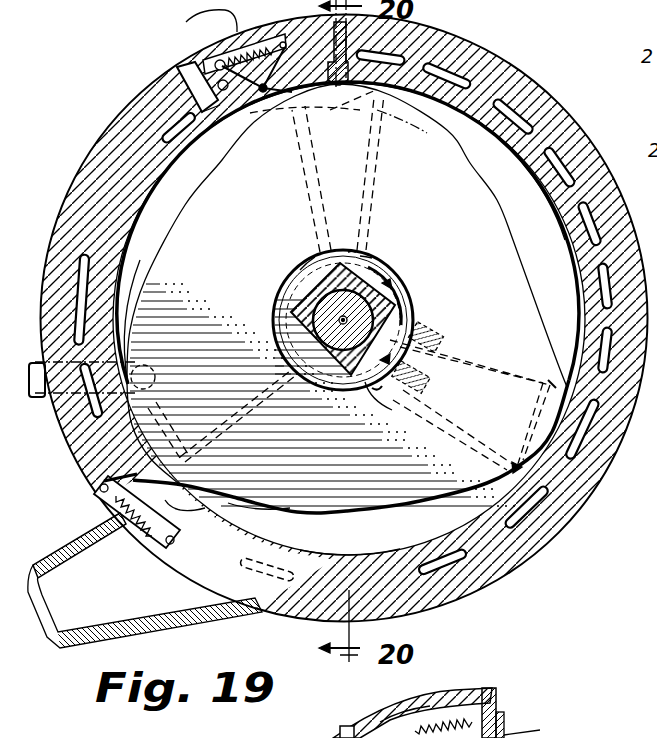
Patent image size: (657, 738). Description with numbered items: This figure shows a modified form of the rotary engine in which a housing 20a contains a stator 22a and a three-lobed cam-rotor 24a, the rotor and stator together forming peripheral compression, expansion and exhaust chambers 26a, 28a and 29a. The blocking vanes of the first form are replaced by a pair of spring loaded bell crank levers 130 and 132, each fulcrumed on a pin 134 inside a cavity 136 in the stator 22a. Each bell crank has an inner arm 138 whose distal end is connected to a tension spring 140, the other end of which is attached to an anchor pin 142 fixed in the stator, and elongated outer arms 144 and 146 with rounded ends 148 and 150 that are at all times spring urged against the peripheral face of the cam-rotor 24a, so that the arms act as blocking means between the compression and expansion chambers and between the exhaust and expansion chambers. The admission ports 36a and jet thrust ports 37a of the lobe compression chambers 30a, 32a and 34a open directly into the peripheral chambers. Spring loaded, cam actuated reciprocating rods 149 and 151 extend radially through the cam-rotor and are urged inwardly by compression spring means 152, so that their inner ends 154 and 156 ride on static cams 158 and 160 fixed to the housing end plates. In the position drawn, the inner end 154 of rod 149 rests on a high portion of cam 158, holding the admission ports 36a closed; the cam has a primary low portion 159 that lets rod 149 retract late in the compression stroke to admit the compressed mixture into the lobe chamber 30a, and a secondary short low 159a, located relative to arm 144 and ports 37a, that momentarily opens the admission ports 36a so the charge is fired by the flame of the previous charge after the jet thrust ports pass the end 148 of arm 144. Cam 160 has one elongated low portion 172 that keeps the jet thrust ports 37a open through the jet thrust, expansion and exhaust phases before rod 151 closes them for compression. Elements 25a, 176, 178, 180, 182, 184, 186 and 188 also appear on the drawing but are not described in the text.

The housing 20a is at (526, 73).
The stator 22a is at (466, 43).
The three lobed cam-rotor 24a is at (461, 256).
The hub 25a is at (400, 300).
The compression chamber 26a is at (183, 226).
The expansion chamber 28a is at (543, 216).
The exhaust chamber 29a is at (389, 541).
The compression chamber 30a is at (122, 440).
The compression chamber 32a is at (341, 171).
The compression chamber 34a is at (470, 403).
The admission ports 36a is at (513, 467).
The jet thrust ports 37a is at (550, 381).
The bell crank lever 130 is at (220, 118).
The bell crank lever 132 is at (106, 480).
The pin 134 is at (262, 94).
The cavity 136 is at (206, 58).
The inner arm 138 is at (179, 71).
The tension spring 140 is at (190, 20).
The anchor pin 142 is at (273, 100).
The outer arm 144 is at (343, 90).
The outer arm 146 is at (214, 511).
The rounded end 148 is at (375, 130).
The reciprocating rod 149 is at (478, 433).
The rounded end 150 is at (273, 516).
The reciprocating rod 151 is at (463, 355).
The compression spring means 152 is at (431, 379).
The inner end 154 is at (362, 256).
The inner end 156 is at (318, 266).
The static cam 158 is at (364, 386).
The primary low portion 159 is at (300, 282).
The secondary short low 159a is at (366, 261).
The static cam 160 is at (398, 292).
The elongated low portion 172 is at (390, 280).
The ring 176 is at (412, 700).
The groove 178 is at (402, 710).
The plate 180 is at (520, 734).
The block 182 is at (487, 689).
The bolt 184 is at (358, 726).
The spring 186 is at (478, 712).
The retainer 188 is at (498, 694).